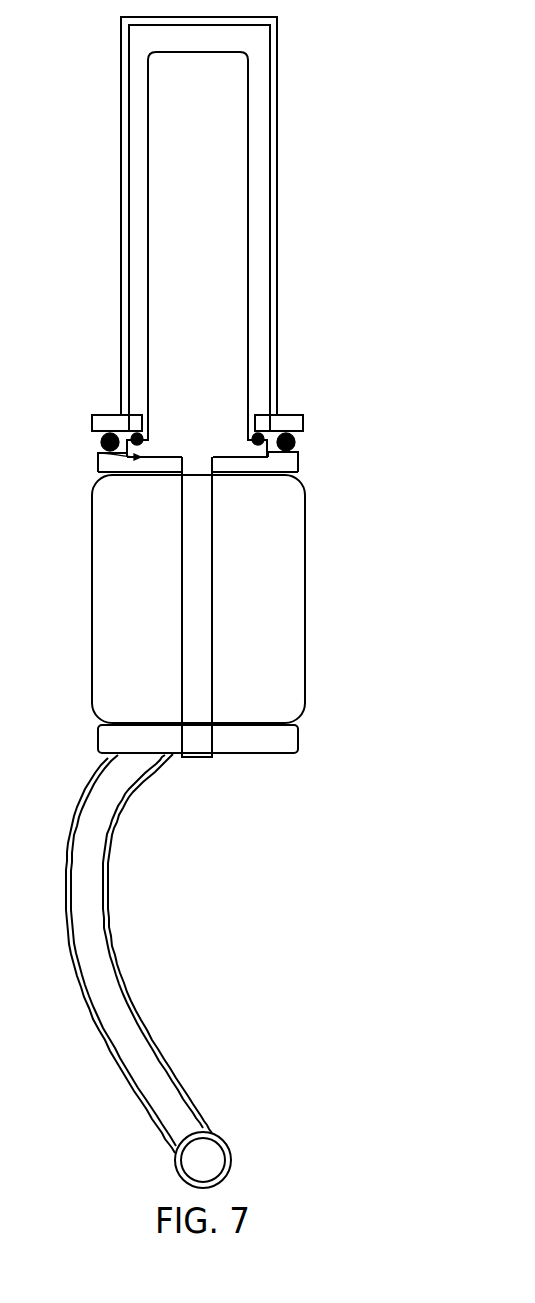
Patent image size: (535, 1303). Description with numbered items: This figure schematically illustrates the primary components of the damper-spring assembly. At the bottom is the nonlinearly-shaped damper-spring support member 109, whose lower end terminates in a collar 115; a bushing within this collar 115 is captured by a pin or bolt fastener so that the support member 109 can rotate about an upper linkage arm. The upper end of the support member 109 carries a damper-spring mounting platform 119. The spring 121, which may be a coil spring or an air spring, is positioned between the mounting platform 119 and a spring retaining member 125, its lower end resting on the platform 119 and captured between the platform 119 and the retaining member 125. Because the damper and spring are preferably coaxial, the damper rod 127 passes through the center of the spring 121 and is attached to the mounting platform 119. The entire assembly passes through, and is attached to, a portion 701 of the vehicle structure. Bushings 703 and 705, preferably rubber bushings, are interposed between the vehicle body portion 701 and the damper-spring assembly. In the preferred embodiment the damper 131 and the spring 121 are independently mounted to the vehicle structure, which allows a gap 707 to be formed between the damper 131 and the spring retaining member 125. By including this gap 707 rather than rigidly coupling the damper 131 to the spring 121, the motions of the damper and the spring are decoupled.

The portion of the vehicle structure 701 is at (278, 146).
The damper 131 is at (212, 228).
The bushing 705 is at (266, 434).
The bushing 703 is at (297, 443).
The spring retaining member 125 is at (296, 465).
The gap 707 is at (100, 453).
The spring 121 is at (108, 566).
The damper rod 127 is at (213, 598).
The damper-spring mounting platform 119 is at (283, 747).
The damper-spring support member 109 is at (172, 909).
The collar 115 is at (175, 1163).